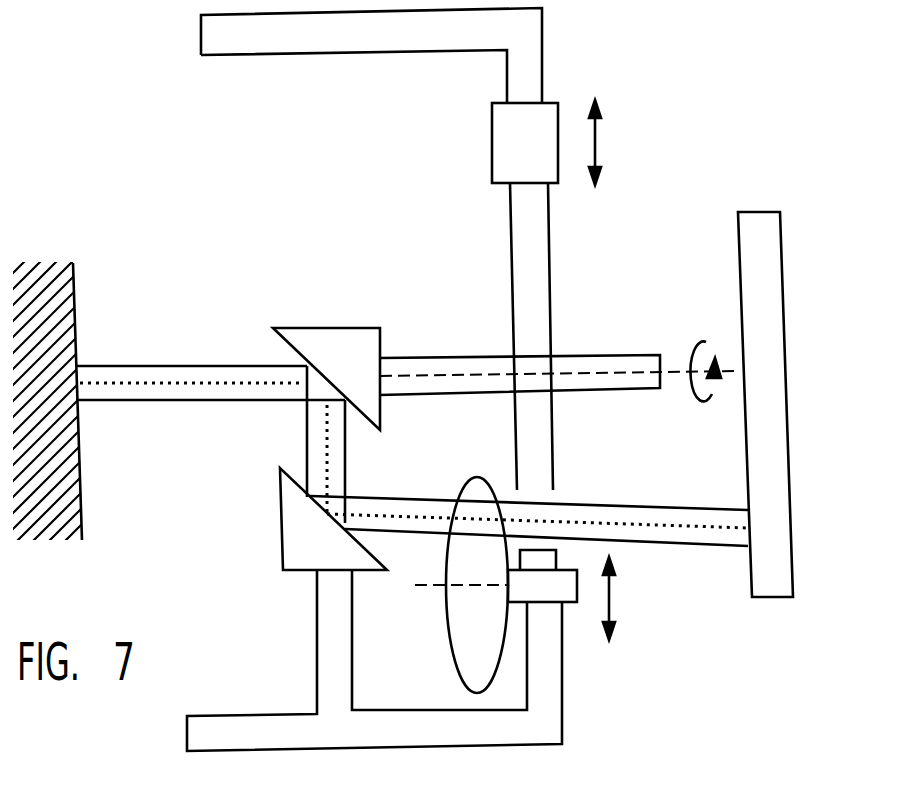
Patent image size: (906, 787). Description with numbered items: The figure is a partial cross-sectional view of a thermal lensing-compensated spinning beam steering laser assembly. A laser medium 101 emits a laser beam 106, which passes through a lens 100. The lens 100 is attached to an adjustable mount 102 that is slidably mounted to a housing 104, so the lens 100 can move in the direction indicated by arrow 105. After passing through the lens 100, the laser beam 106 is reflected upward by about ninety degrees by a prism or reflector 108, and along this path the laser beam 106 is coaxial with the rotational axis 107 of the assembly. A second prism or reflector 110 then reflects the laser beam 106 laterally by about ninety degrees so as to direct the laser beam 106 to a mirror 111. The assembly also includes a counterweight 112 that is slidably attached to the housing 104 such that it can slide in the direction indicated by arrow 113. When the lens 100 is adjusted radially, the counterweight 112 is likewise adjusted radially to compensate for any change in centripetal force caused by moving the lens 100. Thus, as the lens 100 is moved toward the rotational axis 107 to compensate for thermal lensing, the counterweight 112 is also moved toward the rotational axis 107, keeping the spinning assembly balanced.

The lens 100 is at (450, 648).
The laser medium 101 is at (781, 236).
The adjustable mount 102 is at (578, 604).
The housing 104 is at (548, 247).
The arrow 105 is at (611, 600).
The laser beam 106 is at (212, 364).
The rotational axis 107 is at (679, 368).
The prism or reflector 108 is at (282, 518).
The prism or reflector 110 is at (327, 328).
The mirror 111 is at (75, 290).
The counterweight 112 is at (492, 143).
The arrow 113 is at (597, 143).